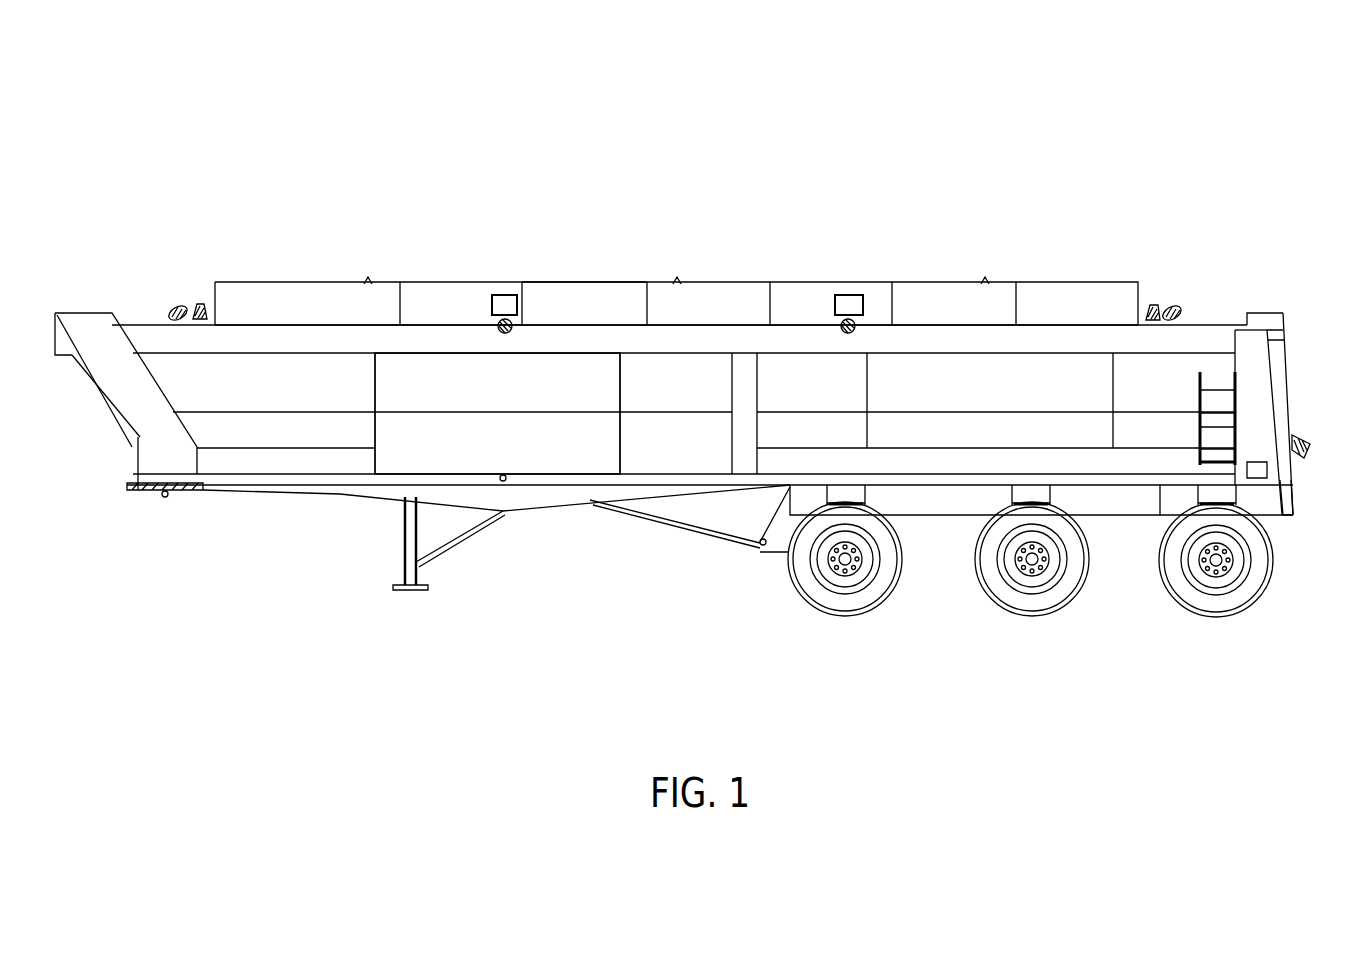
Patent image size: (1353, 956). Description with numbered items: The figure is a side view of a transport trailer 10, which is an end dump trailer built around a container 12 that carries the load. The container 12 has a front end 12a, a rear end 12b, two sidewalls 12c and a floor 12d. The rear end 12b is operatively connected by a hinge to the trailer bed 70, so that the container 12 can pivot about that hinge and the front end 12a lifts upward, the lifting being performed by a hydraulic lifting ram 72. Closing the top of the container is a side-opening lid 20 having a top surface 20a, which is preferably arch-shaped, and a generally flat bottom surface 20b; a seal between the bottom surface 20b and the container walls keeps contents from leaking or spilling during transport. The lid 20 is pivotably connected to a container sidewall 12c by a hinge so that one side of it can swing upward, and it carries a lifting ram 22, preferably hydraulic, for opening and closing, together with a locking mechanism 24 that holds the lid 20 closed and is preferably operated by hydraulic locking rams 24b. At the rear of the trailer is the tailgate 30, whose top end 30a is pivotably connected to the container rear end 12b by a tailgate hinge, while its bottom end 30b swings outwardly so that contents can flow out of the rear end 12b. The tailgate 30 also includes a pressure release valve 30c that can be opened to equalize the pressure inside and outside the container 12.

The transport trailer 10 is at (899, 131).
The container 12 is at (1208, 323).
The front end 12a is at (138, 490).
The rear end 12b is at (1252, 313).
The sidewall 12c is at (523, 396).
The floor 12d is at (665, 474).
The lid 20 is at (928, 282).
The top surface 20a is at (620, 282).
The bottom surface 20b is at (683, 325).
The lifting ram 22 is at (199, 305).
The locking mechanism 24 is at (512, 297).
The locking ram 24b is at (172, 308).
The tailgate 30 is at (1285, 337).
The top end 30a is at (1270, 320).
The bottom end 30b is at (1285, 517).
The pressure release valve 30c is at (1294, 458).
The trailer bed 70 is at (1122, 487).
The hydraulic lifting ram 72 is at (418, 571).